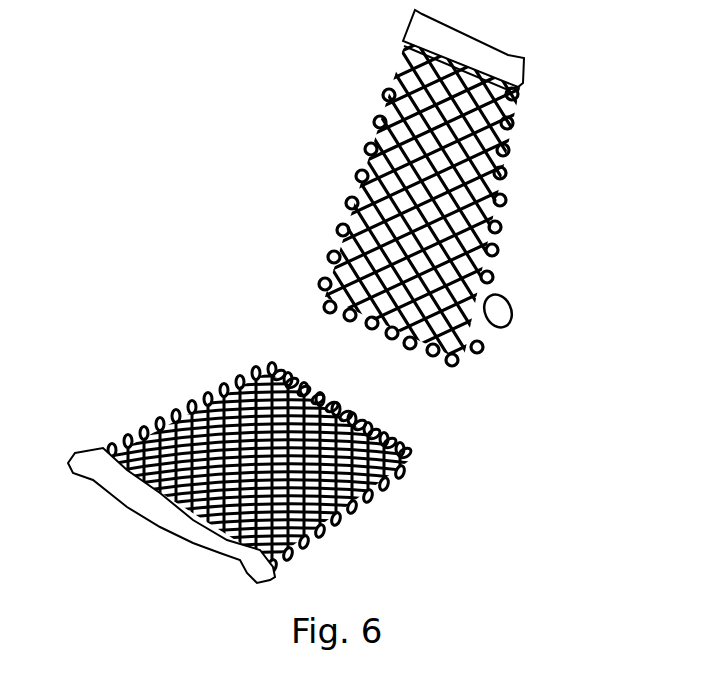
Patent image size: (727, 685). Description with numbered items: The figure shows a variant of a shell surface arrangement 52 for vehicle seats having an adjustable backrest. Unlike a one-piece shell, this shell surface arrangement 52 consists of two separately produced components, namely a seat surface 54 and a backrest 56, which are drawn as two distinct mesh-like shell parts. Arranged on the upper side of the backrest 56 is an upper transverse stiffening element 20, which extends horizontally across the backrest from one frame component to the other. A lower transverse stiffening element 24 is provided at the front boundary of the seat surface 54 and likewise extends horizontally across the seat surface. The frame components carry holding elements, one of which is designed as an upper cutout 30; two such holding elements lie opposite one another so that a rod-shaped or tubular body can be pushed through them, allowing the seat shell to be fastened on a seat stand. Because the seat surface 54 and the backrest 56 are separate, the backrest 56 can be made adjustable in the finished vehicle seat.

The upper transverse stiffening element 20 is at (475, 52).
The lower transverse stiffening element 24 is at (158, 510).
The upper cutout 30 is at (500, 312).
The shell surface arrangement 52 is at (253, 233).
The seat surface 54 is at (170, 403).
The backrest 56 is at (372, 123).